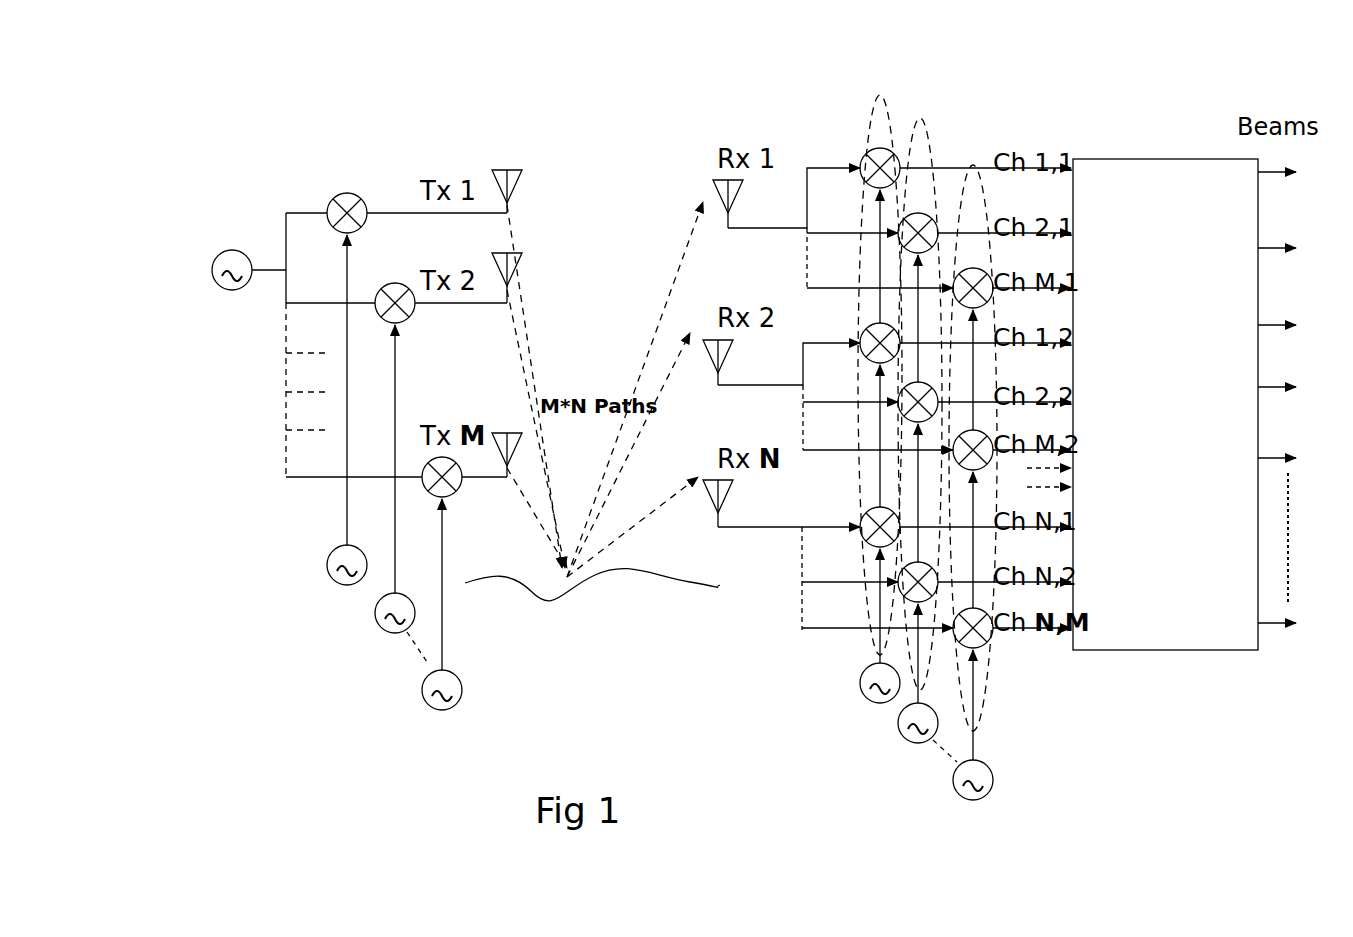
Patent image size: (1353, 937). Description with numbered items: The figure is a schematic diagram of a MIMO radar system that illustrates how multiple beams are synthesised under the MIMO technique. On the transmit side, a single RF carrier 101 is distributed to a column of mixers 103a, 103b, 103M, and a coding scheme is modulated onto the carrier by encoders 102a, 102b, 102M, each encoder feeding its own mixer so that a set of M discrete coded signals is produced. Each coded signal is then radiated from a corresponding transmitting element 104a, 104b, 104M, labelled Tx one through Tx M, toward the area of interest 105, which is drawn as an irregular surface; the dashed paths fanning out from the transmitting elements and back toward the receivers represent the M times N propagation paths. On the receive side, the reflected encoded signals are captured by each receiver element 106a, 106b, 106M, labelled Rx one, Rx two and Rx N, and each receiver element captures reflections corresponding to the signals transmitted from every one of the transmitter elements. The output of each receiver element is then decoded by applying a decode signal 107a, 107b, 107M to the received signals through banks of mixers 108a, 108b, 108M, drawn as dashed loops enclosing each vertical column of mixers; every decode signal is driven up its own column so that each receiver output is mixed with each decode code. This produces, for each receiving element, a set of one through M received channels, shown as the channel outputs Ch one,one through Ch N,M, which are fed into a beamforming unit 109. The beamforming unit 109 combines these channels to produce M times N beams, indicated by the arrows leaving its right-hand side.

The carrier 101 is at (213, 281).
The encoder 102a is at (333, 552).
The encoder 102b is at (414, 620).
The encoder 102M is at (457, 700).
The mixer 103a is at (333, 197).
The mixer 103b is at (397, 283).
The mixer 103M is at (458, 488).
The transmitting element 104a is at (508, 165).
The transmitting element 104b is at (507, 252).
The transmitting element 104M is at (510, 430).
The area of interest 105 is at (678, 588).
The receiver element 106a is at (713, 180).
The receiver element 106b is at (710, 383).
The receiver element 106M is at (727, 505).
The decode signal 107a is at (867, 682).
The decode signal 107b is at (946, 720).
The decode signal 107M is at (1002, 781).
The bank of mixers 108a is at (883, 100).
The bank of mixers 108b is at (927, 125).
The bank of mixers 108M is at (977, 170).
The beamforming unit 109 is at (1180, 633).